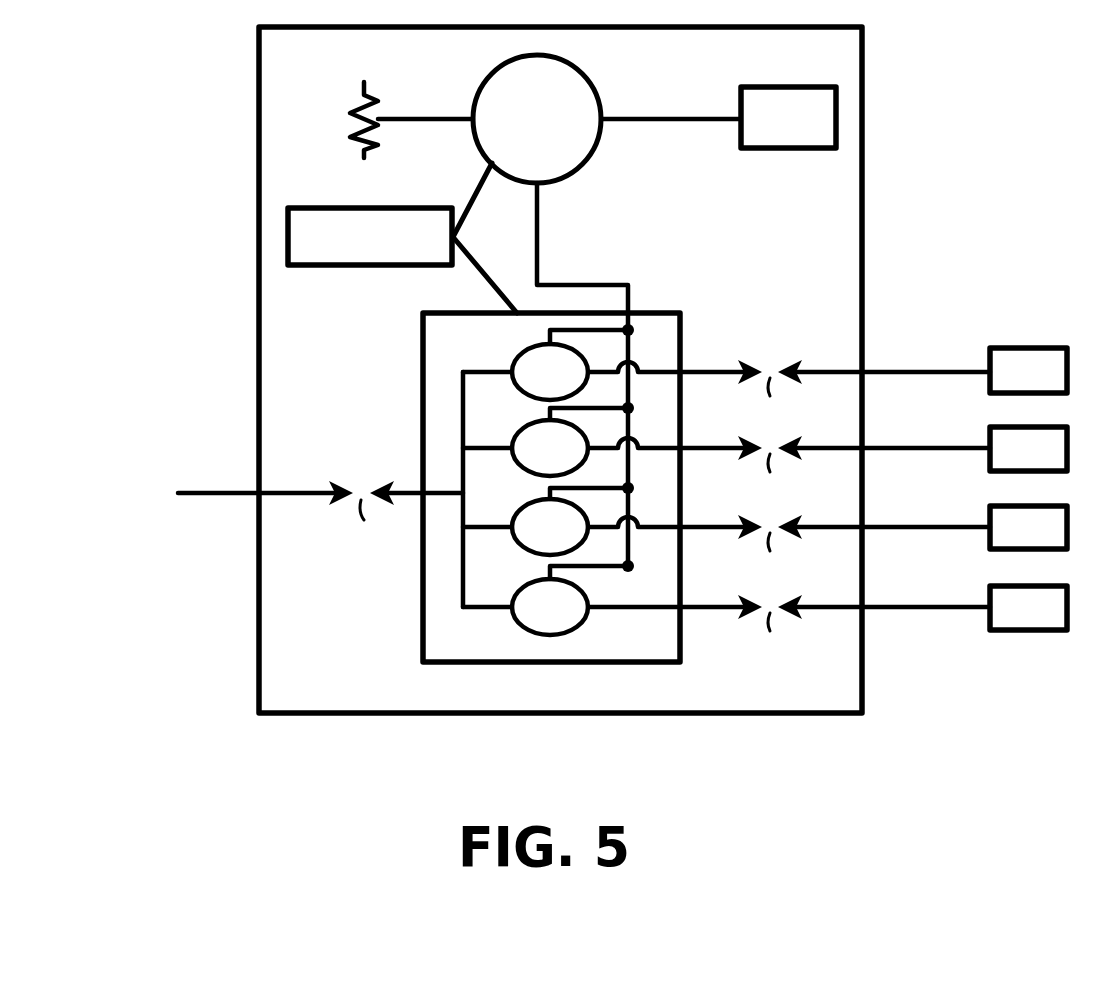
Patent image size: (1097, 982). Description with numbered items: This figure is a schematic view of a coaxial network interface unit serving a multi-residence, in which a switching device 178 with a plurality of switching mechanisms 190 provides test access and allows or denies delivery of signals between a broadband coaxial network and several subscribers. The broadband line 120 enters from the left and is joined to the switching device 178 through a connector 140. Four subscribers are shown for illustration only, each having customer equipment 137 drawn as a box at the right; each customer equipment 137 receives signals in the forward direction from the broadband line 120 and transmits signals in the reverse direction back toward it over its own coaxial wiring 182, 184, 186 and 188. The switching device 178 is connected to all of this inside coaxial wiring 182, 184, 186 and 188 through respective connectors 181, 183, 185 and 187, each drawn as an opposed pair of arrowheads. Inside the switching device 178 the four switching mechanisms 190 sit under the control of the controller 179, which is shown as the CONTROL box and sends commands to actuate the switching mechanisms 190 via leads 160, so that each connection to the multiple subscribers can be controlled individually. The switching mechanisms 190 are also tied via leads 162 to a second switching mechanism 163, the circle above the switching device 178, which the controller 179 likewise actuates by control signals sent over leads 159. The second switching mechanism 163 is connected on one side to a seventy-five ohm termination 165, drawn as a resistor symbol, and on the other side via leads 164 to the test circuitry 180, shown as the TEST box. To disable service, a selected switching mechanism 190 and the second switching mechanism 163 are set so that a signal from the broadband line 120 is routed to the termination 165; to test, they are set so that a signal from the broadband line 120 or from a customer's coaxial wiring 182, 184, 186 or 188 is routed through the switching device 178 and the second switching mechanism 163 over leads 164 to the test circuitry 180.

The broadband line 120 is at (228, 495).
The customer equipment 137 is at (1028, 489).
The connector 140 is at (364, 520).
The leads 159 is at (468, 210).
The leads 160 is at (476, 271).
The leads 162 is at (539, 226).
The second switching mechanism 163 is at (537, 119).
The leads 164 is at (693, 121).
The 75 ohm termination 165 is at (352, 150).
The switching device 178 is at (422, 642).
The controller 179 is at (337, 266).
The test circuitry 180 is at (793, 150).
The connector 181 is at (770, 396).
The coaxial wiring 182 is at (910, 374).
The connector 183 is at (770, 472).
The coaxial wiring 184 is at (910, 450).
The connector 185 is at (770, 551).
The coaxial wiring 186 is at (910, 529).
The connector 187 is at (770, 631).
The coaxial wiring 188 is at (910, 609).
The switching mechanisms 190 is at (612, 479).